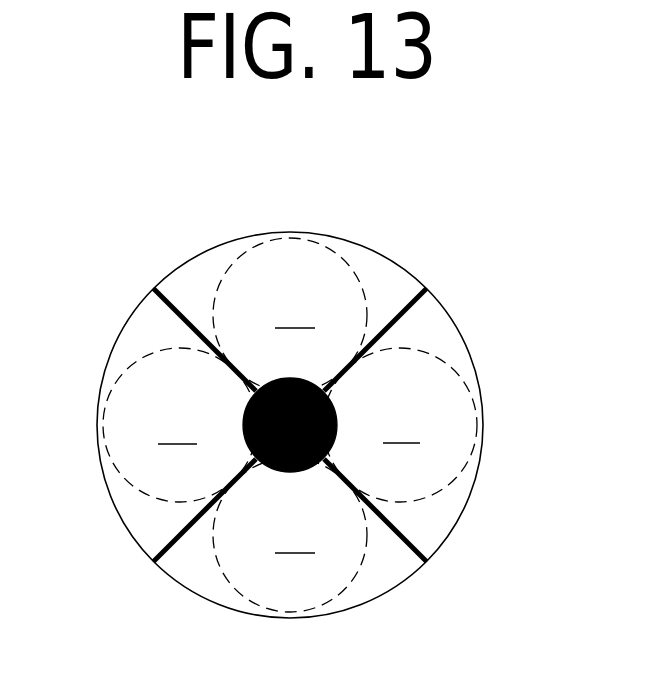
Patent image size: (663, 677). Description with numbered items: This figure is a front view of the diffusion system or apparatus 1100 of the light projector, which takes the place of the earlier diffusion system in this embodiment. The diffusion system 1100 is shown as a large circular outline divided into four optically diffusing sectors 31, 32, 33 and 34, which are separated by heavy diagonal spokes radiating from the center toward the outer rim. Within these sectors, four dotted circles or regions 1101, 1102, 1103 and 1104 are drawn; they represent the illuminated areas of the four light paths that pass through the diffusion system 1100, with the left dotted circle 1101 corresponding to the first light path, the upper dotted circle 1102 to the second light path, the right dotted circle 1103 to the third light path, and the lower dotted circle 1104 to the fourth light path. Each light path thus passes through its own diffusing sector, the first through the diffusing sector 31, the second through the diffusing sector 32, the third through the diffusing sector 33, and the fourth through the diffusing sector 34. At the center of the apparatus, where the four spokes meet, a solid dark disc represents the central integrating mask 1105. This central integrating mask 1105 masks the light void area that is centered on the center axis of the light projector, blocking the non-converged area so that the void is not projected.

The diffusion system or apparatus 1100 is at (186, 232).
The dotted circle or region 1101 is at (113, 380).
The dotted circle or region 1102 is at (368, 277).
The dotted circle or region 1103 is at (442, 495).
The dotted circle or region 1104 is at (237, 595).
The central integrating mask 1105 is at (335, 403).
The optically diffusing sector 31 is at (165, 322).
The optically diffusing sector 32 is at (410, 317).
The optically diffusing sector 33 is at (405, 553).
The optically diffusing sector 34 is at (158, 533).